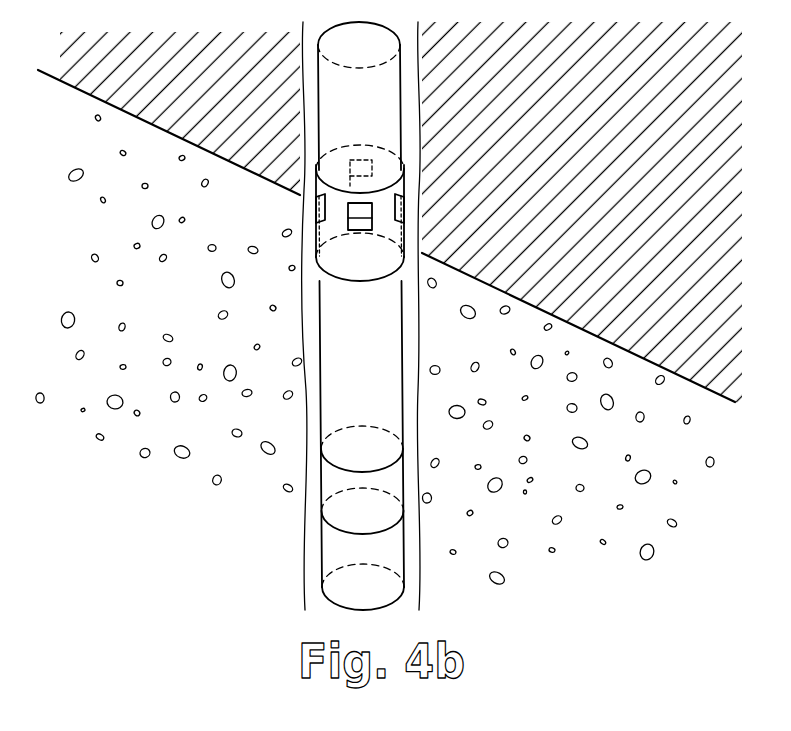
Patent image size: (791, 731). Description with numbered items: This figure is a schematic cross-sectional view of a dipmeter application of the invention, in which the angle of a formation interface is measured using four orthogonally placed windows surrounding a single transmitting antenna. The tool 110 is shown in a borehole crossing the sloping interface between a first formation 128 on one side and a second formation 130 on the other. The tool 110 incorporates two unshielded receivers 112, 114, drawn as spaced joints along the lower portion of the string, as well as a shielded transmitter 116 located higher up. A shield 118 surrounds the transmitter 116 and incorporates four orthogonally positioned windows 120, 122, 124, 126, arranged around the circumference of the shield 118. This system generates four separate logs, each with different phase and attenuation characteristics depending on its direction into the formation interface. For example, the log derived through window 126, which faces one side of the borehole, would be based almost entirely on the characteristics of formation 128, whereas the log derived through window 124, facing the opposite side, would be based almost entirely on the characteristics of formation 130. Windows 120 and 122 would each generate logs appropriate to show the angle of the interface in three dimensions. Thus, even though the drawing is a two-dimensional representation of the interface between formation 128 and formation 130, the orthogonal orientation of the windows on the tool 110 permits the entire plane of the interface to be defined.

The tool 110 is at (379, 383).
The unshielded receiver 112 is at (362, 461).
The unshielded receiver 114 is at (356, 546).
The shielded transmitter 116 is at (338, 165).
The shield 118 is at (378, 293).
The window 120 is at (368, 149).
The window 122 is at (353, 246).
The window 124 is at (414, 197).
The window 126 is at (306, 208).
The formation 128 is at (195, 318).
The formation 130 is at (595, 133).